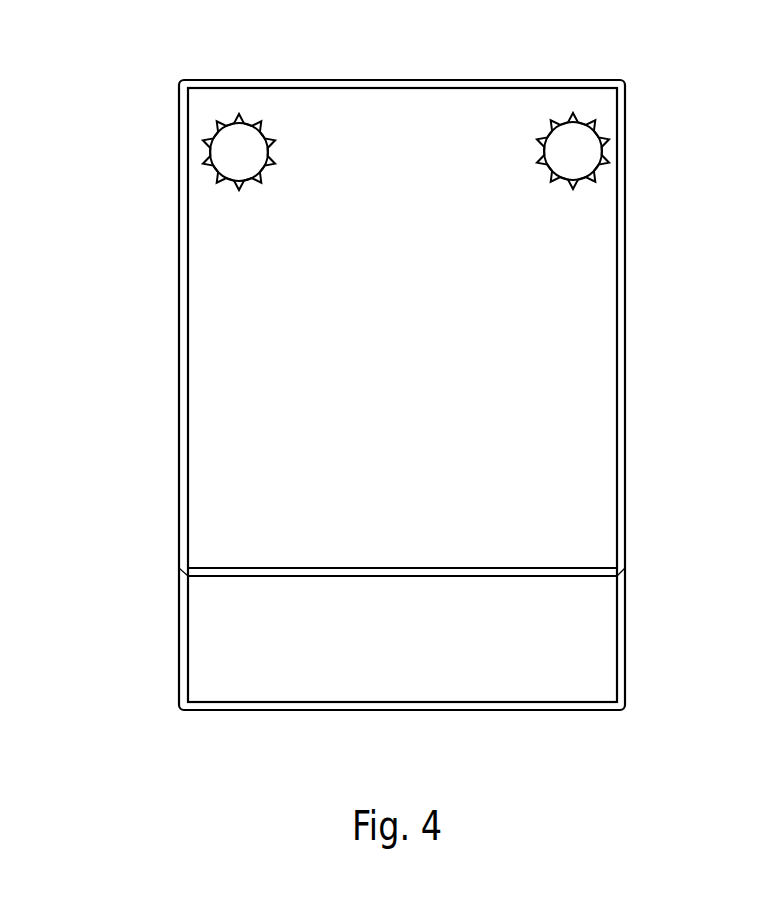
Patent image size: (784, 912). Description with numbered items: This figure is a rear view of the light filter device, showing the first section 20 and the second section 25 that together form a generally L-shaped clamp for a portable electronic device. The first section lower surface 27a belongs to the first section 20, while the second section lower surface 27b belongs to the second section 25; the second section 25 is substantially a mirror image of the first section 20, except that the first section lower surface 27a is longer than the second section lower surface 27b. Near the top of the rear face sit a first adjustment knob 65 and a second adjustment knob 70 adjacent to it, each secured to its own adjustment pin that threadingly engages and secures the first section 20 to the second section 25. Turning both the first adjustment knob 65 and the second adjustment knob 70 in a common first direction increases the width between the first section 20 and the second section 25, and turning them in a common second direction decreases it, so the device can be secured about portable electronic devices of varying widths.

The first section 20 is at (635, 645).
The second section 25 is at (627, 424).
The first section lower surface 27a is at (504, 643).
The second section lower surface 27b is at (581, 238).
The first adjustment knob 65 is at (578, 145).
The second adjustment knob 70 is at (230, 152).